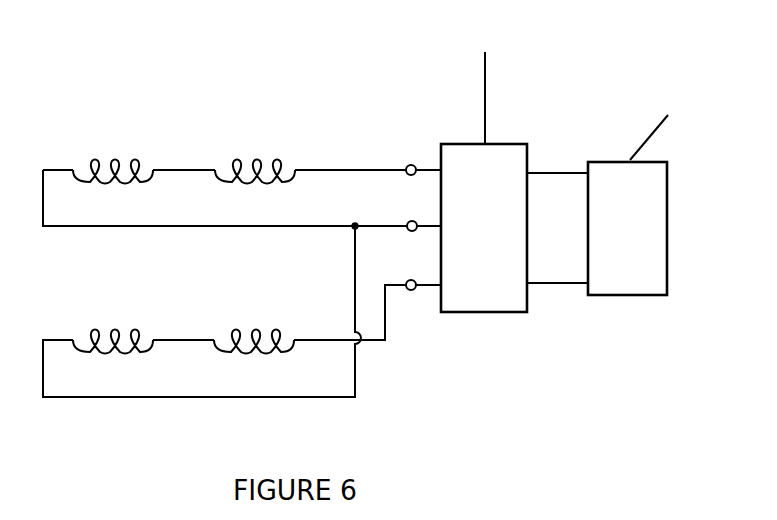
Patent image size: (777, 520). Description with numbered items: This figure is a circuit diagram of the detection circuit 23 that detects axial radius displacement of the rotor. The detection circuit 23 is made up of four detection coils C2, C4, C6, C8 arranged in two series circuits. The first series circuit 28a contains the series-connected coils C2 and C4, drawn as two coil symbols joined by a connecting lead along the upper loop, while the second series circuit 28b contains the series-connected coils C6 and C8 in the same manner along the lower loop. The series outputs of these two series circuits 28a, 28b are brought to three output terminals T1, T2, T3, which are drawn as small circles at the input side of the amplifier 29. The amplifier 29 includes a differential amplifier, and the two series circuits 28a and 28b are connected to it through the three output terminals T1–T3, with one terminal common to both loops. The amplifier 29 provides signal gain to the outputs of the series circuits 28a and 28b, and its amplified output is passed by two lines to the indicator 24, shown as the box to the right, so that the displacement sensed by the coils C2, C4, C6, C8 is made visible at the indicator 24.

The detection circuit 23 is at (242, 226).
The detection coil C2 is at (113, 160).
The detection coil C4 is at (255, 160).
The detection coil C6 is at (113, 330).
The detection coil C8 is at (252, 330).
The series circuit 28a is at (172, 168).
The series circuit 28b is at (168, 338).
The output terminal T1 is at (410, 164).
The output terminal T2 is at (411, 291).
The output terminal T3 is at (408, 222).
The amplifier 29 is at (504, 312).
The indicator 24 is at (627, 295).